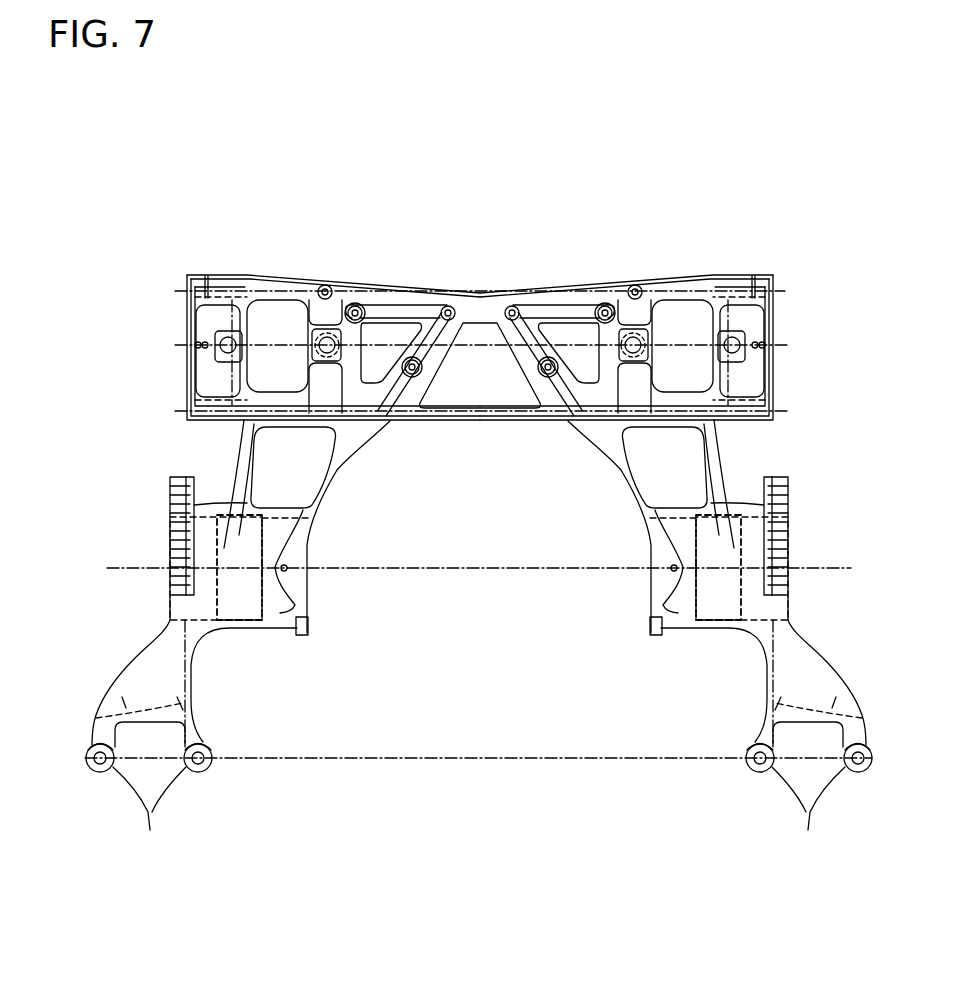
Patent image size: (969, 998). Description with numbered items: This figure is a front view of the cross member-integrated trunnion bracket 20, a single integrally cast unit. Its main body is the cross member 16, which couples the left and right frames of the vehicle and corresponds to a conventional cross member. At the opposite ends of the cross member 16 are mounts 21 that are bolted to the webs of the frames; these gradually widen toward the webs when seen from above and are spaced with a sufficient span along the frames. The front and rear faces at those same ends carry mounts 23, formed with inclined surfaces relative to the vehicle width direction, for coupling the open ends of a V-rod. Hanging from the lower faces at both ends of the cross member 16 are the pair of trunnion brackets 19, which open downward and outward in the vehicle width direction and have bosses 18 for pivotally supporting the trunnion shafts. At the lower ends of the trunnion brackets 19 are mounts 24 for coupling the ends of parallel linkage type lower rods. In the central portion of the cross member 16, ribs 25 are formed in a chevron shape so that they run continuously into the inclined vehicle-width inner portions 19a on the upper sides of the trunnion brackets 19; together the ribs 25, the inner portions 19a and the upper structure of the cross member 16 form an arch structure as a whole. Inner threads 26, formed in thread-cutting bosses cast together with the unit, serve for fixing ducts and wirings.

The cross member-integrated trunnion bracket 20 is at (663, 197).
The cross member 16 is at (482, 284).
The mounts 21 is at (187, 290).
The mounts 23 is at (213, 379).
The ribs 25 is at (418, 358).
The inner threads 26 is at (606, 305).
The trunnion brackets 19 is at (226, 465).
The vehicle-width inner portions 19a is at (338, 470).
The bosses 18 is at (300, 607).
The mounts 24 is at (478, 802).